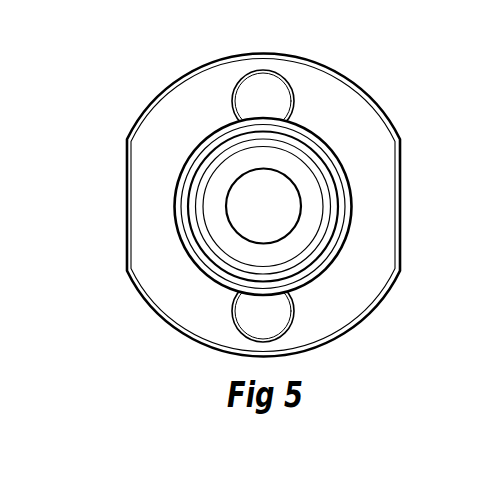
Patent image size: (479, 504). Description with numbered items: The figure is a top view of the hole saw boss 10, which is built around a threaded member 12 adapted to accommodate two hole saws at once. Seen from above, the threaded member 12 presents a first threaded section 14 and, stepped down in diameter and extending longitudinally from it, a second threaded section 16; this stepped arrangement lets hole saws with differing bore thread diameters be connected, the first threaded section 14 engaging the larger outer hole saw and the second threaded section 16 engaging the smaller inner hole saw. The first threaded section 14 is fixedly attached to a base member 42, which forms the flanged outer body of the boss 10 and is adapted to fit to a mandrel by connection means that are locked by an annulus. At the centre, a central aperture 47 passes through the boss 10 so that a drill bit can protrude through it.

The hole saw boss 10 is at (276, 205).
The threaded member 12 is at (385, 323).
The first threaded section 14 is at (210, 135).
The second threaded section 16 is at (333, 173).
The base member 42 is at (167, 128).
The central aperture 47 is at (265, 207).